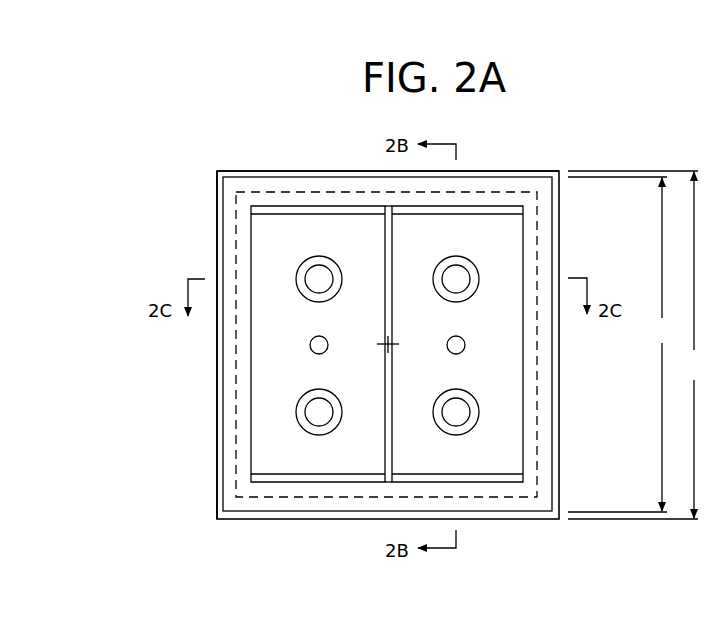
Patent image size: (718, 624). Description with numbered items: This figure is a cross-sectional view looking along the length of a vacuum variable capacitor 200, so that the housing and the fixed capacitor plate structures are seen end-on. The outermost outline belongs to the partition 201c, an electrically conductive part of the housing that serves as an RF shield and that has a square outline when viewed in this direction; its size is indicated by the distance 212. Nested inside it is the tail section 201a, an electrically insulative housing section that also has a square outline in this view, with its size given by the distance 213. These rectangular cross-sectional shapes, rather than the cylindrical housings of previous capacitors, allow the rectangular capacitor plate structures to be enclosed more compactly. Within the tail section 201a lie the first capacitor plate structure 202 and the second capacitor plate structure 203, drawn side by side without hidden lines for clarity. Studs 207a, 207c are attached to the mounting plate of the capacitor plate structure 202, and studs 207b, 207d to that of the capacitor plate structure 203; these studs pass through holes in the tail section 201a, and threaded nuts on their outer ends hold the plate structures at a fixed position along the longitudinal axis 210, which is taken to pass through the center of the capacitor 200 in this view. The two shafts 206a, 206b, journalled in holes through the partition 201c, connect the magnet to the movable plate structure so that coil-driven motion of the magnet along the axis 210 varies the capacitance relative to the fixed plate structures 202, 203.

The vacuum variable capacitor 200 is at (234, 162).
The tail section 201a is at (229, 447).
The partition 201c is at (218, 213).
The first capacitor plate structure 202 is at (265, 252).
The second capacitor plate structure 203 is at (513, 247).
The shaft 206a is at (313, 349).
The shaft 206b is at (462, 350).
The stud 207a is at (319, 270).
The stud 207b is at (457, 268).
The stud 207c is at (315, 412).
The stud 207d is at (458, 412).
The longitudinal axis 210 is at (389, 346).
The distance 212 is at (640, 345).
The distance 213 is at (623, 344).